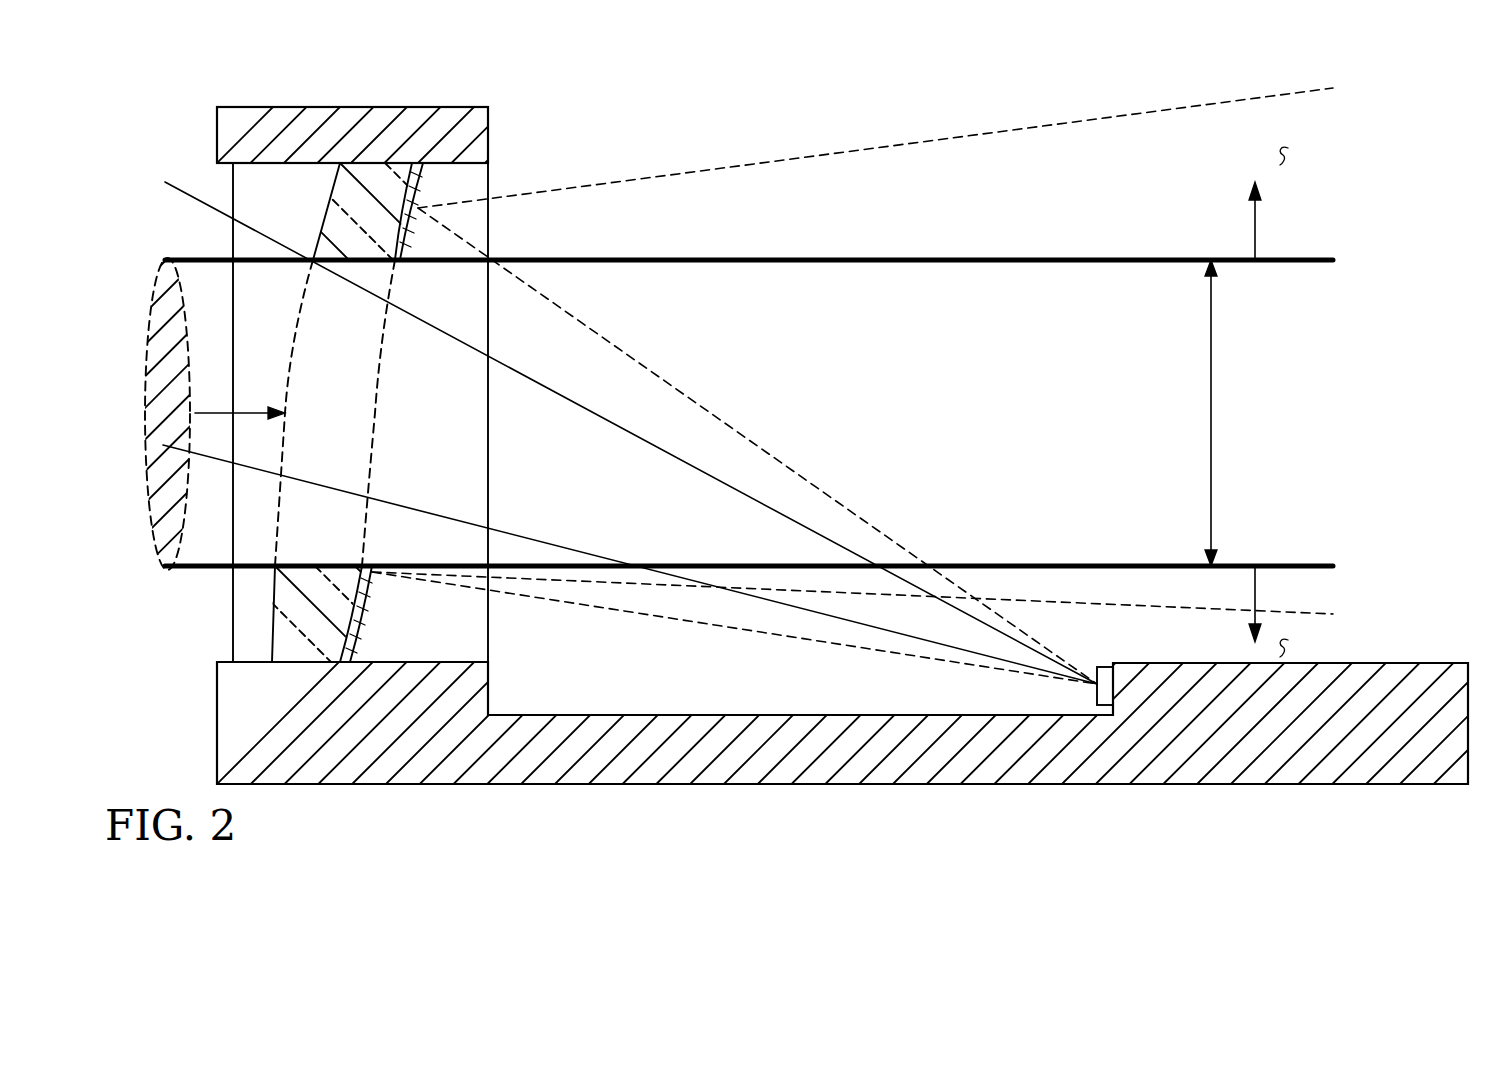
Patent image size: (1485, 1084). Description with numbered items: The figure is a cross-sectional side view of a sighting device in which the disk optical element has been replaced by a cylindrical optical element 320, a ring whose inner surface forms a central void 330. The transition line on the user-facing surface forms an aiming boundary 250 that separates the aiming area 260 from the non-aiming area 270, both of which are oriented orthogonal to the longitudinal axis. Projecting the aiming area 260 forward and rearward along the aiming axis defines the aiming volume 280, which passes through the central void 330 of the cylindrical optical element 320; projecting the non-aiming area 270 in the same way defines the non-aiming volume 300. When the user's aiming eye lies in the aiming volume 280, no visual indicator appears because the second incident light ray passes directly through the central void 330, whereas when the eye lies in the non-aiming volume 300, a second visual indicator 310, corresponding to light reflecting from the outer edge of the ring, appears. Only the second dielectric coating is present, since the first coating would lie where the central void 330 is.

The aiming boundary 250 is at (165, 260).
The aiming area 260 is at (1212, 403).
The non-aiming area 270 is at (1257, 222).
The aiming volume 280 is at (162, 410).
The non-aiming volume 300 is at (1283, 155).
The second visual indicator 310 is at (1193, 106).
The cylindrical optical element 320 is at (457, 192).
The central void 330 is at (348, 440).